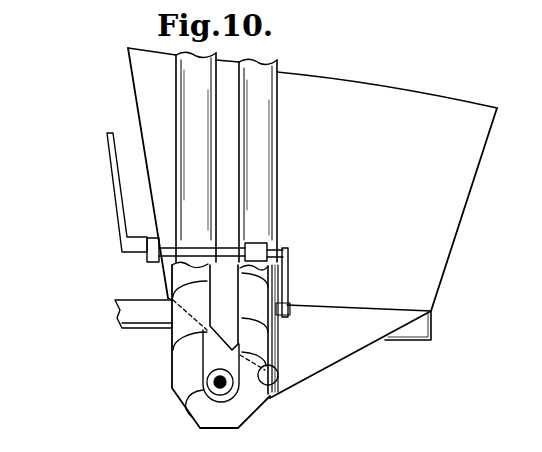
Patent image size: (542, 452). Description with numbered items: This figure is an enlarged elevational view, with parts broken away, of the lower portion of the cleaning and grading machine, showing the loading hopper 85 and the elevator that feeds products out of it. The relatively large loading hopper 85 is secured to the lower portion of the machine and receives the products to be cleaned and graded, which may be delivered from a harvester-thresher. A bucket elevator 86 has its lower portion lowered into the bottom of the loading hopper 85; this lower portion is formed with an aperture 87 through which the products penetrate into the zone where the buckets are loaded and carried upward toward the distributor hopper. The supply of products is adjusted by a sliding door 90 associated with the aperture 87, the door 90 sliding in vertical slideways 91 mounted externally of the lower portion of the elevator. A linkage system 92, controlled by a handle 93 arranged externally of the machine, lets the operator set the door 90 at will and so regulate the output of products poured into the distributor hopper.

The loading hopper 85 is at (466, 205).
The bucket elevator 86 is at (203, 145).
The aperture 87 is at (270, 385).
The sliding door 90 is at (272, 347).
The vertical slideways 91 is at (278, 367).
The linkage system 92 is at (288, 280).
The handle 93 is at (117, 188).